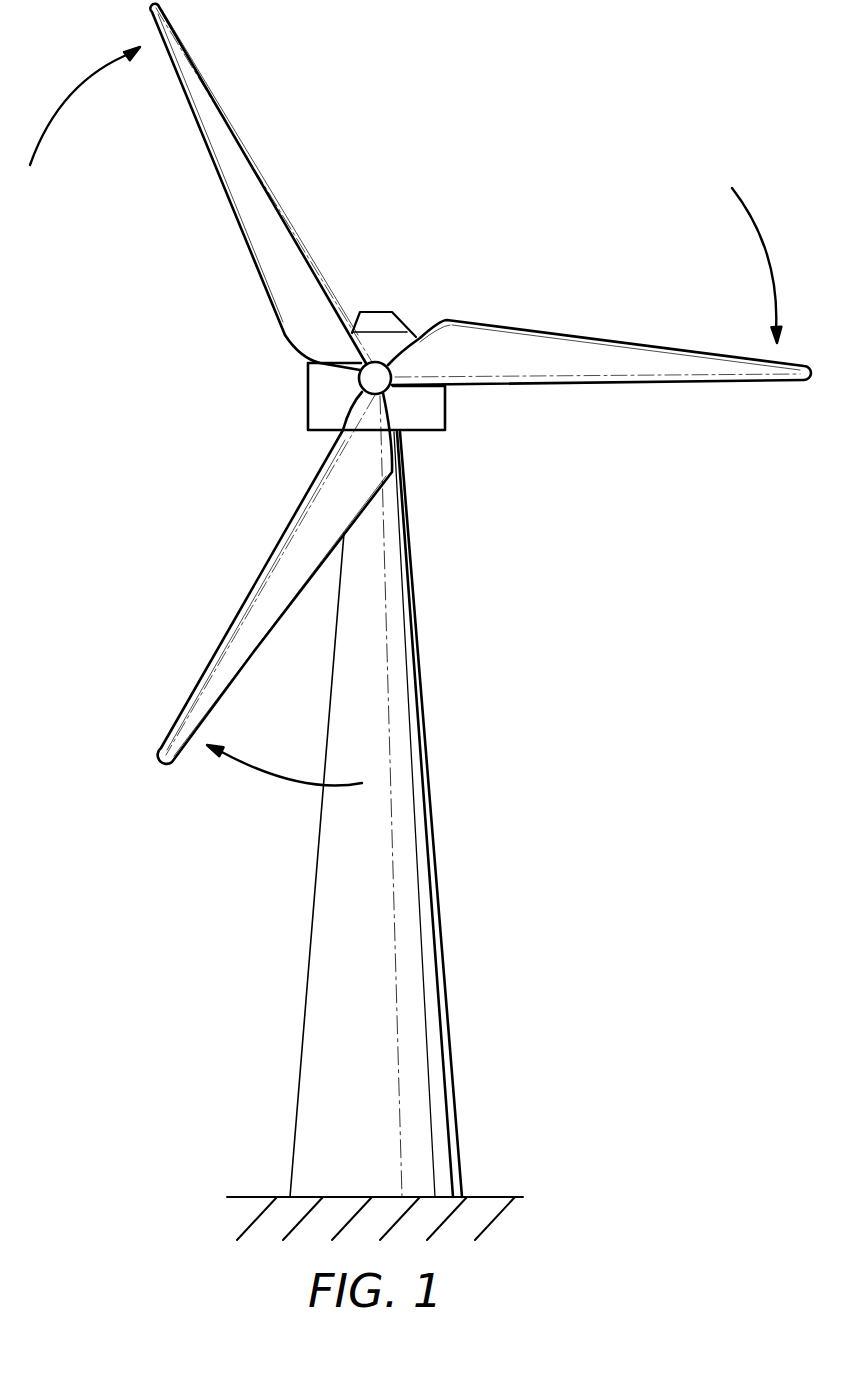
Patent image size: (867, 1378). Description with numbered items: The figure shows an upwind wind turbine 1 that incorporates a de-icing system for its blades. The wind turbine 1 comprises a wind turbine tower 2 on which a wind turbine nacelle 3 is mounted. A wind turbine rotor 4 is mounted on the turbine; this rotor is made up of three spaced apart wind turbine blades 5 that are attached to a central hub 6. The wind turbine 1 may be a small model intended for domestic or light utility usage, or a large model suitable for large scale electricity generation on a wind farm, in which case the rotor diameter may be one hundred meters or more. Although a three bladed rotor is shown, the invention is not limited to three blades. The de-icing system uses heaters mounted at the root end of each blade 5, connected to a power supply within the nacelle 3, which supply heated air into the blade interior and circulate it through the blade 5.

The wind turbine 1 is at (420, 622).
The wind turbine tower 2 is at (425, 828).
The wind turbine nacelle 3 is at (441, 413).
The wind turbine rotor 4 is at (420, 395).
The wind turbine blades 5 is at (580, 347).
The central hub 6 is at (378, 372).